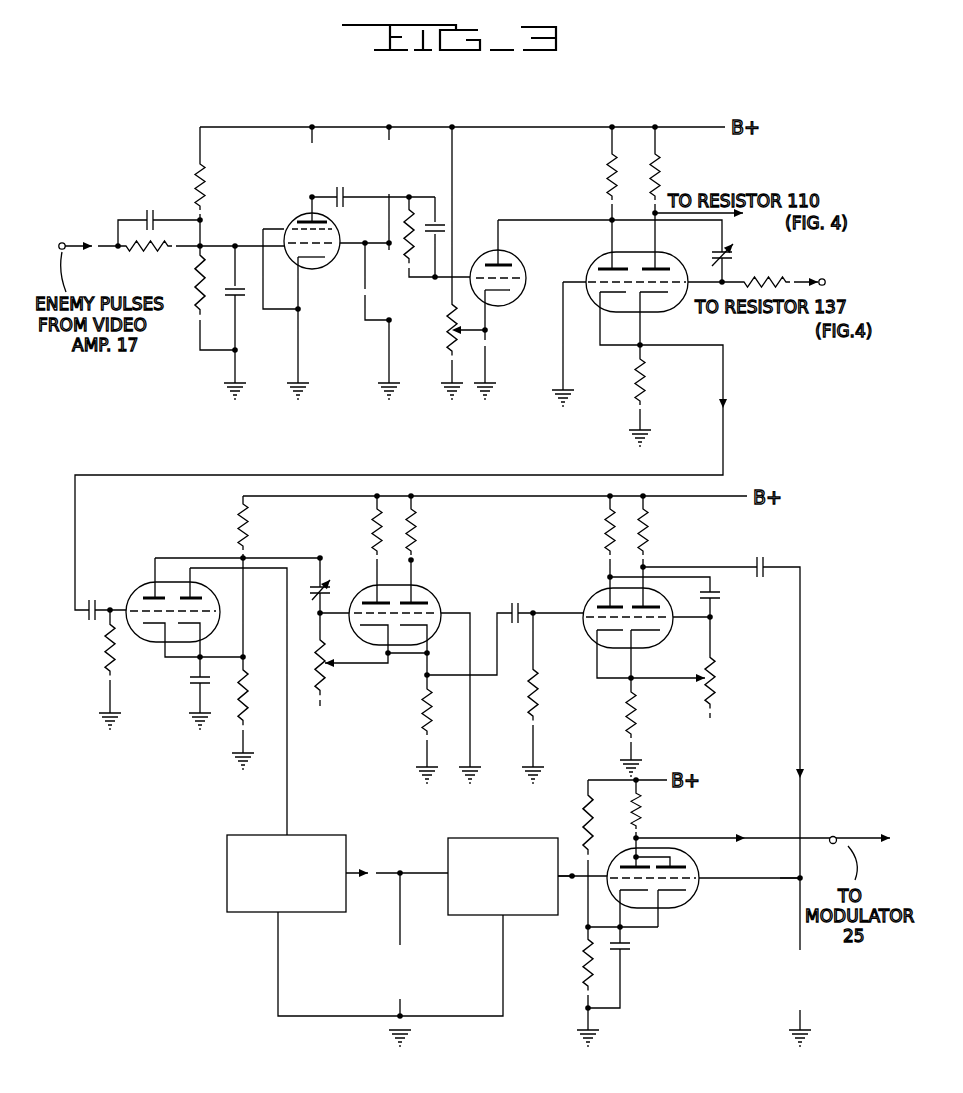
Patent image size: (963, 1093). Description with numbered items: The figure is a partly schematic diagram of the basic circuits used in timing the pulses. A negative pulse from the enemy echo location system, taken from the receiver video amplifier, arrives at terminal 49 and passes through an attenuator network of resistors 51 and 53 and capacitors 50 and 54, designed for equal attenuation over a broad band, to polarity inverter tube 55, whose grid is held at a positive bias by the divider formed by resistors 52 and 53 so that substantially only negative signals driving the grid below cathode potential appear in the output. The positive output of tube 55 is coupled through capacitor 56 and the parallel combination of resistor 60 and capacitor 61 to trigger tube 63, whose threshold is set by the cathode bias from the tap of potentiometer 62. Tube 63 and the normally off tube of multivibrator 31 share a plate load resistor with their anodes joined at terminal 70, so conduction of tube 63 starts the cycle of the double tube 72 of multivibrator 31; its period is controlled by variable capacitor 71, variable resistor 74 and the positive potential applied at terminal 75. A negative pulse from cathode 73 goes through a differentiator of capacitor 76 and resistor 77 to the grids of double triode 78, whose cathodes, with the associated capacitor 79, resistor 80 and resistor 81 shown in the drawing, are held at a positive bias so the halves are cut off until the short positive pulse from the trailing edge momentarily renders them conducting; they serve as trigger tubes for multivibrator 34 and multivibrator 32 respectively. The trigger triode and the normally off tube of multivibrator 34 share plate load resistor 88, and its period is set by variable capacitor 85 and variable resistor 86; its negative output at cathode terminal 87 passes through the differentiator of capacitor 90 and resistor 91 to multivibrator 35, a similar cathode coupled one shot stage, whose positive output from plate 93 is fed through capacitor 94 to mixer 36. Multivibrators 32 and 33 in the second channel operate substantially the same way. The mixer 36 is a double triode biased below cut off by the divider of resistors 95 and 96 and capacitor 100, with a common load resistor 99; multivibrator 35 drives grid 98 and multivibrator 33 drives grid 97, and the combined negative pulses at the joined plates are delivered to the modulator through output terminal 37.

The terminal 49 is at (62, 231).
The capacitor 50 is at (160, 198).
The resistor 51 is at (129, 252).
The resistor 52 is at (207, 170).
The resistor 53 is at (199, 291).
The capacitor 54 is at (235, 288).
The polarity inverter tube 55 is at (300, 214).
The capacitor 56 is at (342, 190).
The resistor 60 is at (406, 228).
The capacitor 61 is at (441, 229).
The potentiometer 62 is at (450, 312).
The trigger tube 63 is at (520, 259).
The terminal 70 is at (611, 221).
The variable capacitor 71 is at (729, 255).
The twin triode tube 72 is at (662, 266).
The cathode 73 is at (641, 346).
The variable resistor 74 is at (766, 283).
The terminal 75 is at (837, 283).
The multivibrator 31 is at (611, 387).
The capacitor 76 is at (96, 604).
The resistor 77 is at (113, 653).
The double triode 78 is at (143, 590).
The bypass capacitor 79 is at (198, 682).
The plate resistor 80 is at (246, 531).
The cathode resistor 81 is at (247, 686).
The variable capacitor 85 is at (316, 590).
The variable resistor 86 is at (316, 660).
The plate load resistor 88 is at (415, 548).
The cathode terminal 87 is at (422, 680).
The capacitor 90 is at (522, 600).
The resistor 91 is at (537, 689).
The plate 93 is at (645, 534).
The capacitor 94 is at (762, 561).
The multivibrator 34 is at (366, 752).
The multivibrator 35 is at (590, 747).
The multivibrator 32 is at (263, 835).
The multivibrator 33 is at (505, 838).
The resistor 95 is at (586, 820).
The resistor 96 is at (586, 967).
The grid 97 is at (572, 882).
The load resistor 99 is at (639, 826).
The capacitor 100 is at (630, 949).
The mixer 36 is at (711, 1022).
The grid 98 is at (797, 881).
The output terminal 37 is at (830, 837).